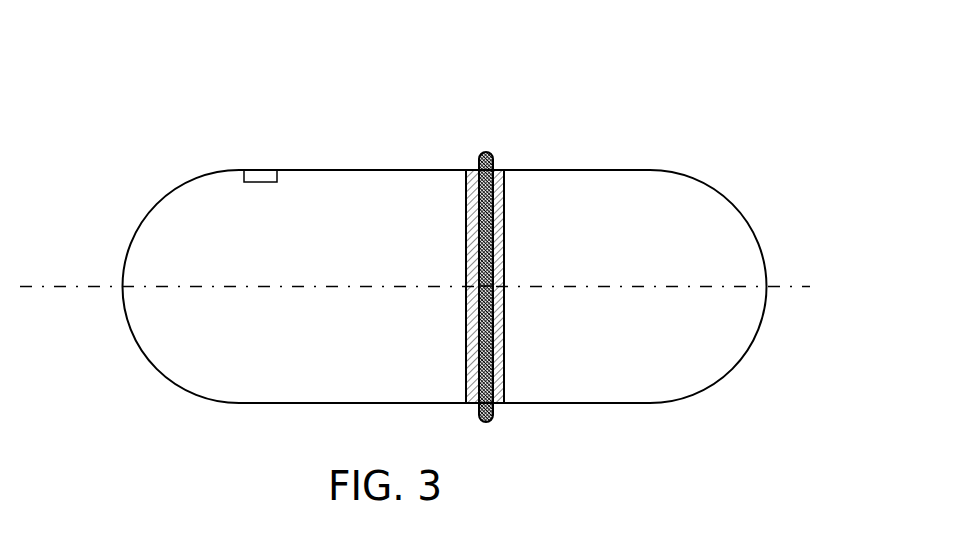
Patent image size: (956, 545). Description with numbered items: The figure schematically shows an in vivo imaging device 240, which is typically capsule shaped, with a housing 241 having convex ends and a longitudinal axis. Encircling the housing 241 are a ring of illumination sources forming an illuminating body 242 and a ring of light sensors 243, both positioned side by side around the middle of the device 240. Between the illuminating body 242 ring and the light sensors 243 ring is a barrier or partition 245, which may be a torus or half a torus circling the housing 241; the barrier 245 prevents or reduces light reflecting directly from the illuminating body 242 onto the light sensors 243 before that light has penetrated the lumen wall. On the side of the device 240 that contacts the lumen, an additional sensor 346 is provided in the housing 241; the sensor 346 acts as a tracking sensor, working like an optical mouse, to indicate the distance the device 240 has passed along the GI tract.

The in vivo imaging device 240 is at (163, 123).
The housing 241 is at (653, 170).
The illuminating body ring 242 is at (497, 170).
The light sensors ring 243 is at (470, 169).
The barrier or partition 245 is at (485, 151).
The additional sensor 346 is at (259, 177).